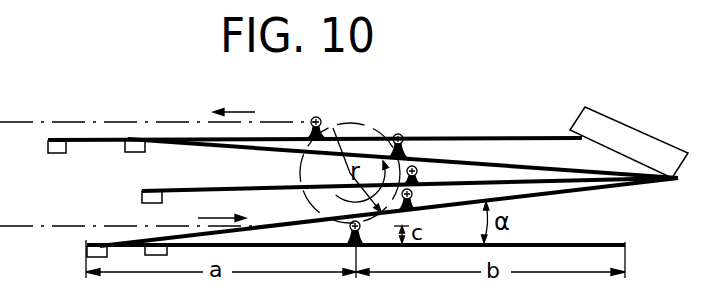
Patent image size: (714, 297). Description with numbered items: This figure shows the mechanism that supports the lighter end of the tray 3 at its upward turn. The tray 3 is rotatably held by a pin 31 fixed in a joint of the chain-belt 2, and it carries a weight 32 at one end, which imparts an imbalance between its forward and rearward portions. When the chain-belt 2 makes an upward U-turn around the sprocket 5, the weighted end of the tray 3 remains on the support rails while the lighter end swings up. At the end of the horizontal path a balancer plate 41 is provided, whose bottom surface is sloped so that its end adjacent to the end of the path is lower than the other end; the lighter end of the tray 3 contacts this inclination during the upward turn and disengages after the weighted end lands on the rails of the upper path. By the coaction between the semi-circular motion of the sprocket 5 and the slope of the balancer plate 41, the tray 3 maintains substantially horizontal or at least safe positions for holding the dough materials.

The chain-belt 2 is at (84, 121).
The tray 3 is at (548, 244).
The sprocket 5 is at (363, 132).
The pin 31 is at (316, 117).
The weight 32 is at (90, 252).
The balancer plate 41 is at (613, 132).